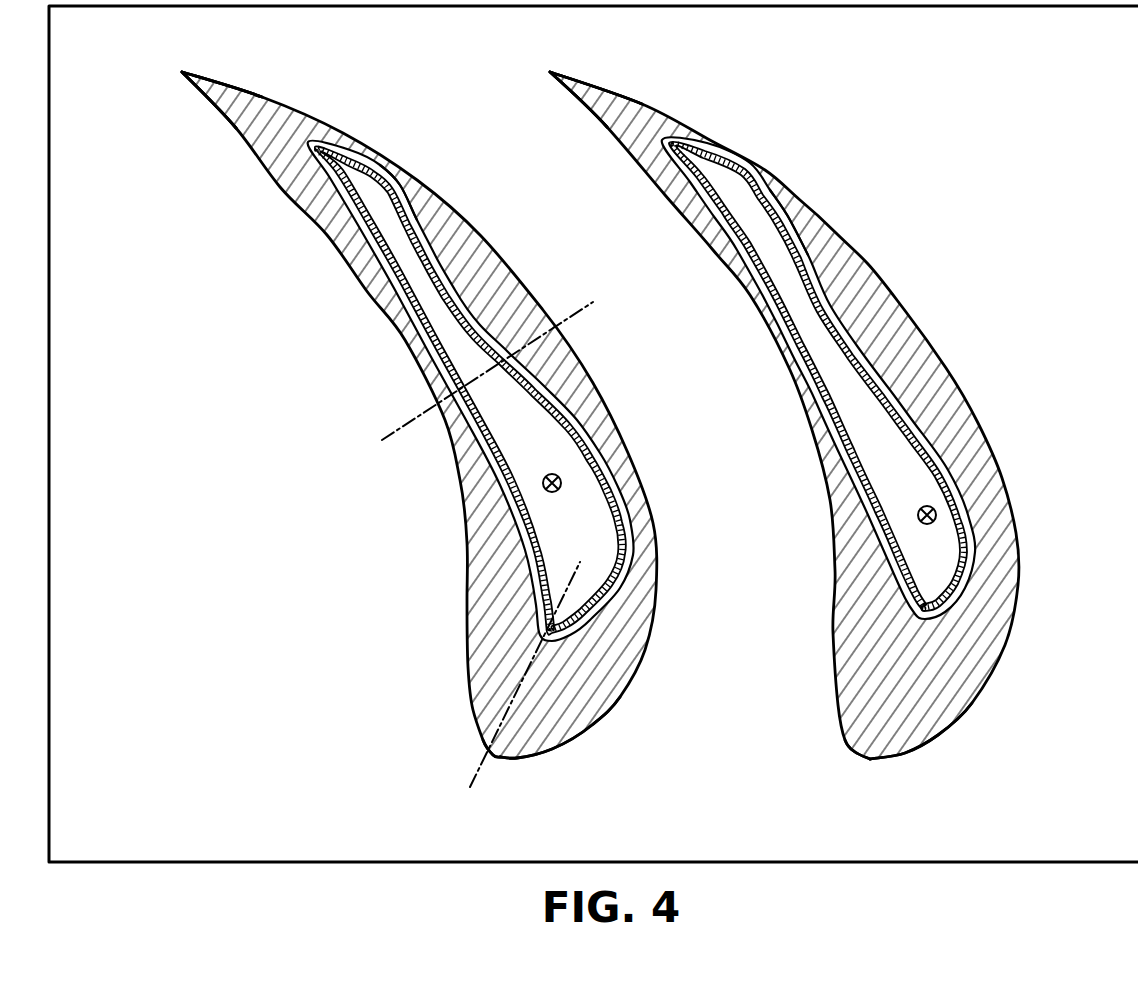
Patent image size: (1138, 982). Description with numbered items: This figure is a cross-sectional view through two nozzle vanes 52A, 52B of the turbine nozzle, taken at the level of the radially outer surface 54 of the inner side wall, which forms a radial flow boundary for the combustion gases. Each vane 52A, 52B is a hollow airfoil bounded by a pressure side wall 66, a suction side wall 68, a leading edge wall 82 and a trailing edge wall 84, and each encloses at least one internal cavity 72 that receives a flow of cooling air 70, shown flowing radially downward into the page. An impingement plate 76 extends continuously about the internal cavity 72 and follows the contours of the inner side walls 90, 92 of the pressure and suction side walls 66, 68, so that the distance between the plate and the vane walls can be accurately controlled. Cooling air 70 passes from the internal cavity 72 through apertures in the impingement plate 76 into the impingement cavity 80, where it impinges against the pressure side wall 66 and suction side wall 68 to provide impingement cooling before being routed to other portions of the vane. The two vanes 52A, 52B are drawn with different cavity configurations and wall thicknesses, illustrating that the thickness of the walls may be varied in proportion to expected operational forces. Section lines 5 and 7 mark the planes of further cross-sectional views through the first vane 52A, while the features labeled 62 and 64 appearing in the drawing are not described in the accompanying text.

The radially outer surface 54 is at (134, 794).
The airfoil body 62 is at (570, 758).
The vane 52A is at (398, 697).
The vane 52B is at (806, 722).
The leading edge 64 is at (194, 135).
The pressure side wall 66 is at (462, 606).
The suction side wall 68 is at (612, 372).
The cooling air 70 is at (565, 490).
The internal cavity 72 is at (548, 455).
The impingement plate 76 is at (372, 243).
The impingement cavity 80 is at (348, 150).
The leading edge wall 82 is at (608, 703).
The trailing edge wall 84 is at (242, 82).
The inner side wall of pressure side wall 90 is at (413, 330).
The inner side wall of suction side wall 92 is at (417, 222).
The section line 5- 5 is at (363, 411).
The section line 7- 7 is at (434, 771).